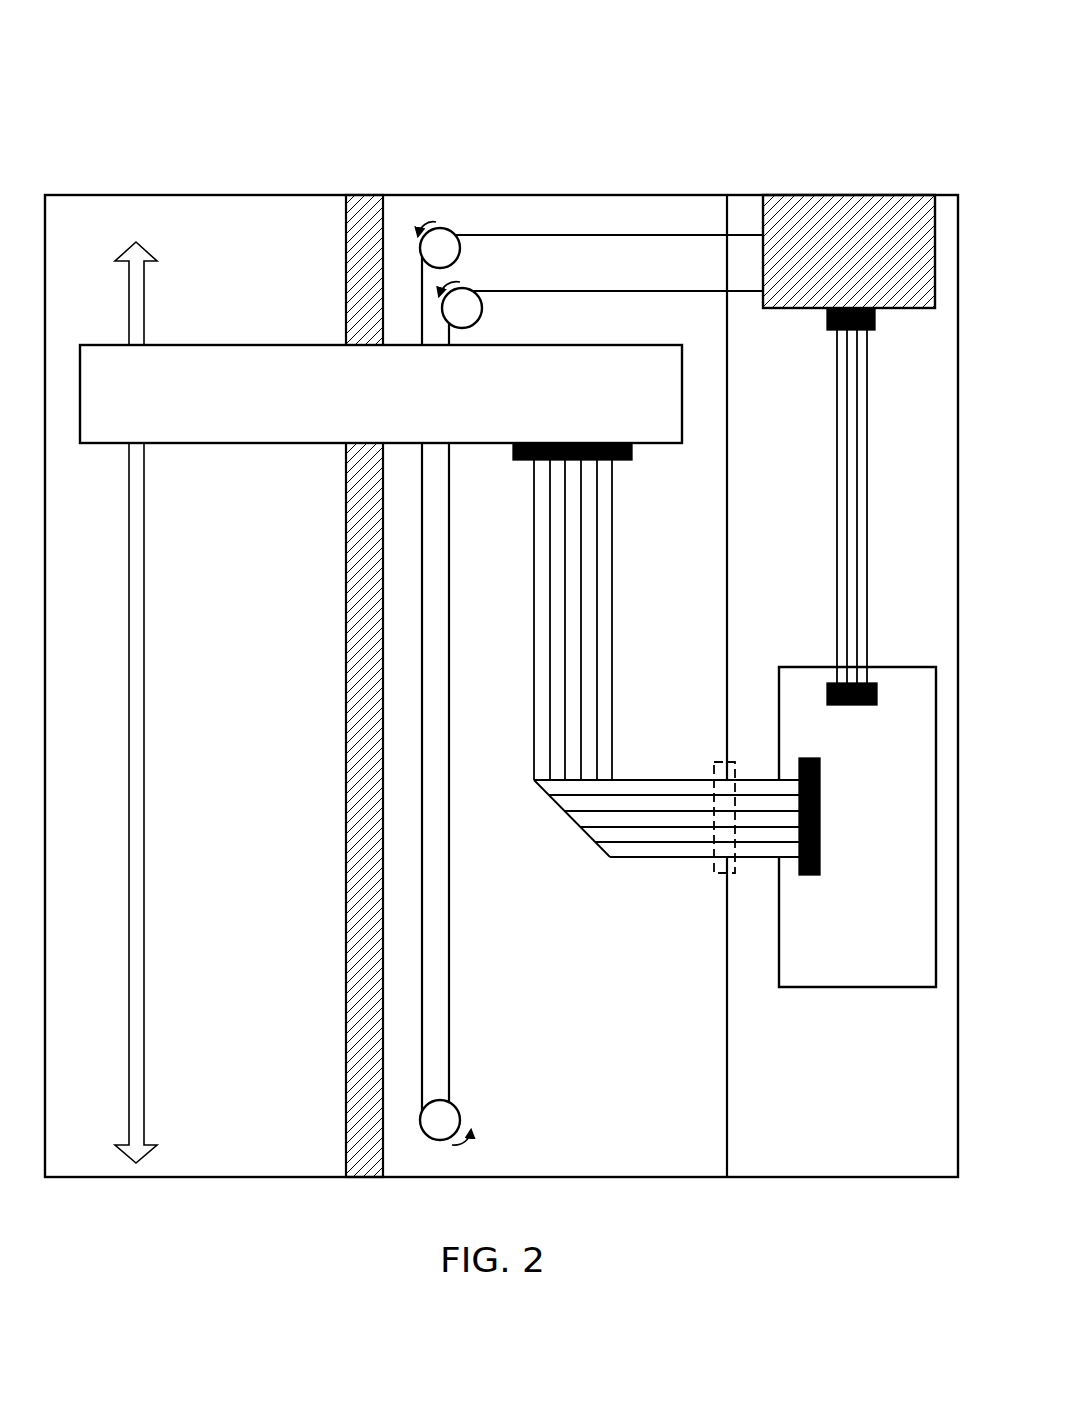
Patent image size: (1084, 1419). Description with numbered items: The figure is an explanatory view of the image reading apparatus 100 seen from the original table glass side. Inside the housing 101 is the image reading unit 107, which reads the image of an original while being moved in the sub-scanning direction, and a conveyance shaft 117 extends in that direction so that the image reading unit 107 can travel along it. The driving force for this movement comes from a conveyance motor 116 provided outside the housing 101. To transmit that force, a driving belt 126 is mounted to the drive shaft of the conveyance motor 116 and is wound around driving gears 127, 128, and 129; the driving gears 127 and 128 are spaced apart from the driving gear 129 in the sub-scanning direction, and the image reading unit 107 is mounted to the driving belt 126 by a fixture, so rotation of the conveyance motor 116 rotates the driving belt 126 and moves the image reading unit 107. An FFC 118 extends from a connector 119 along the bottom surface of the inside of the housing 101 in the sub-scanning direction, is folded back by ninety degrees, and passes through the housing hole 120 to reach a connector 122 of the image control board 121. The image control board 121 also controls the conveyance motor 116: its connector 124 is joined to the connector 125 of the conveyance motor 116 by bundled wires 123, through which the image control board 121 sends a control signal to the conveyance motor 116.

The image reading apparatus 100 is at (194, 121).
The housing 101 is at (105, 195).
The image reading unit 107 is at (230, 345).
The conveyance motor 116 is at (870, 200).
The conveyance shaft 117 is at (346, 580).
The FFC 118 is at (535, 533).
The connector 119 is at (623, 460).
The housing hole 120 is at (714, 762).
The image control board 121 is at (862, 987).
The connector 122 is at (812, 875).
The bundled wires 123 is at (837, 510).
The connector 124 is at (860, 705).
The connector 125 is at (868, 325).
The driving belt 126 is at (663, 235).
The driving gear 127 is at (483, 308).
The driving gear 128 is at (455, 232).
The driving gear 129 is at (462, 1117).